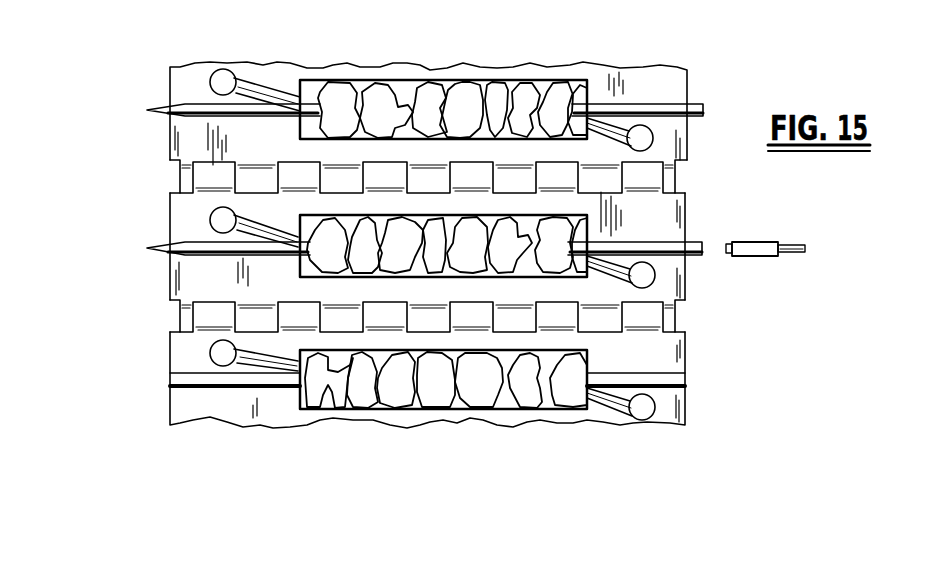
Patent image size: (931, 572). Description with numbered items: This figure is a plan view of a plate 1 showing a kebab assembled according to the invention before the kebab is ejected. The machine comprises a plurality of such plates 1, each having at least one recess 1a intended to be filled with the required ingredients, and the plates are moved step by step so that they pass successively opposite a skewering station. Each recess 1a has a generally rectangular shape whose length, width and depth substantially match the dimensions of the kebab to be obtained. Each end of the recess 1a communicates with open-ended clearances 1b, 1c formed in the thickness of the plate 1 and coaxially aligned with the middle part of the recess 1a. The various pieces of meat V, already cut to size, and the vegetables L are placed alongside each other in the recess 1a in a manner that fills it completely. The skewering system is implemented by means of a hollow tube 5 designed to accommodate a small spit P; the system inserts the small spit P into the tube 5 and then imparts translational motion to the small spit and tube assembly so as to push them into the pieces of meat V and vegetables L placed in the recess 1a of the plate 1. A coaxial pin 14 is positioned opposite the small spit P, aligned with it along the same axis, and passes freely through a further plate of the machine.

The plate 1 is at (168, 217).
The recess 1a is at (298, 263).
The open-ended clearance 1b is at (662, 103).
The open-ended clearance 1c is at (182, 100).
The small spit P is at (160, 102).
The pieces of meat V is at (332, 97).
The vegetables L is at (550, 393).
The hollow tube 5 is at (745, 242).
The coaxial pin 14 is at (728, 256).